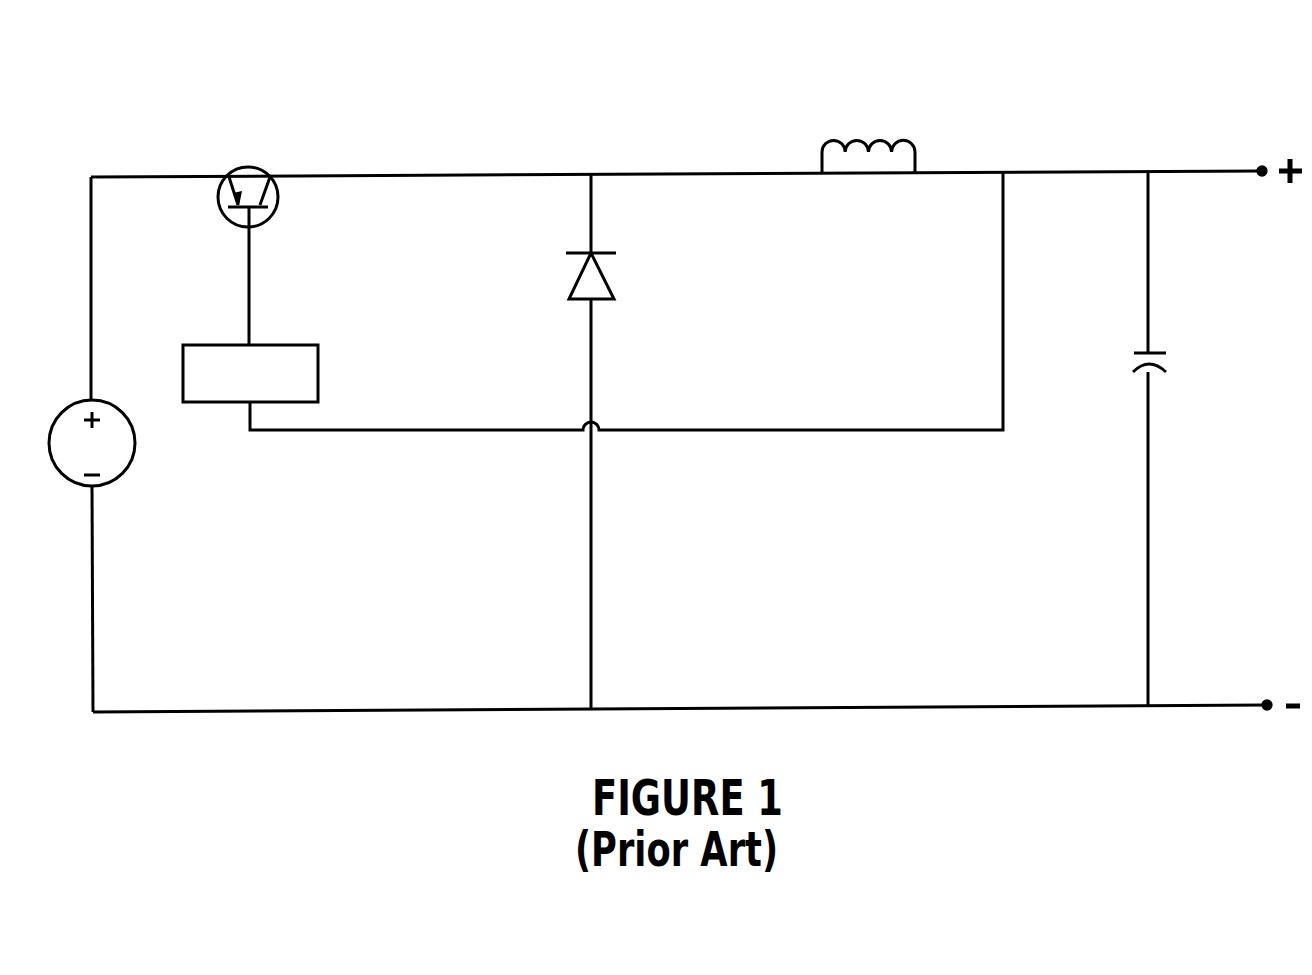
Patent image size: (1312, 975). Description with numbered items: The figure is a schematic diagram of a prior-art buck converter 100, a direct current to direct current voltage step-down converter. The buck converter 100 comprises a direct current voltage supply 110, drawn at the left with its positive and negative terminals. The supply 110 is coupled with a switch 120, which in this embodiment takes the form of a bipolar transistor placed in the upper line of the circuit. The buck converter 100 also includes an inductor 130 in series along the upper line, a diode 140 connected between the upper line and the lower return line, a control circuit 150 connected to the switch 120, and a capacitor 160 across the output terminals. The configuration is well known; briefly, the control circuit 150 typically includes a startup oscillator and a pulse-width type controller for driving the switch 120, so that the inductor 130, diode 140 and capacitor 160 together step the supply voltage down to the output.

The buck converter 100 is at (675, 63).
The direct current voltage supply 110 is at (133, 435).
The switch 120 is at (270, 163).
The inductor 130 is at (885, 150).
The diode 140 is at (605, 282).
The control circuit 150 is at (318, 370).
The capacitor 160 is at (1142, 348).